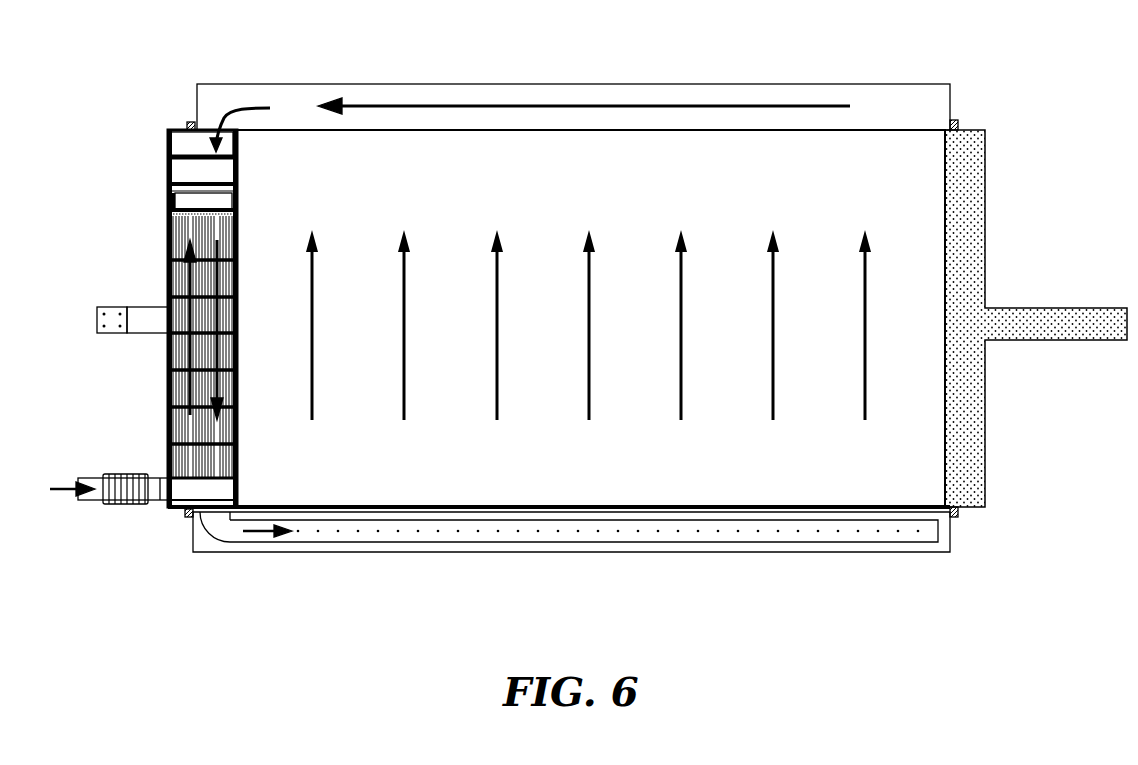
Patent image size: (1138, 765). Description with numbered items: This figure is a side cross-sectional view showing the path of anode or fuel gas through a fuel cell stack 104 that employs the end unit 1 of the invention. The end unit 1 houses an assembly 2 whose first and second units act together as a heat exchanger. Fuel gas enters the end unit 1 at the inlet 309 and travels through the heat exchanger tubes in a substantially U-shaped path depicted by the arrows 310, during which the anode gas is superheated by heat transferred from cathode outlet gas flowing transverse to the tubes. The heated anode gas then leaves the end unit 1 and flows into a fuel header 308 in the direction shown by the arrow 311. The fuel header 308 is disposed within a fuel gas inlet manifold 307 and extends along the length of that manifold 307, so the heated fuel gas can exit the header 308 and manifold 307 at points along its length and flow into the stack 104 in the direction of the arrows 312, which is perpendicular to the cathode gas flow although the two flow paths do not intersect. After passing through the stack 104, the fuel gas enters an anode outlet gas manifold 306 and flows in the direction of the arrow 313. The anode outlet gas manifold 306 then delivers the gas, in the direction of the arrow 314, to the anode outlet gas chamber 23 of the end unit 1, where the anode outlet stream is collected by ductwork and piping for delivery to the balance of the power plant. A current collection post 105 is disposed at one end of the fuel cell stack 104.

The end unit 1 is at (162, 120).
The assembly 2 is at (178, 203).
The anode outlet gas chamber 23 is at (181, 138).
The fuel cell stack 104 is at (880, 148).
The current collection post 105 is at (973, 235).
The anode outlet gas manifold 306 is at (300, 100).
The fuel gas inlet manifold 307 is at (205, 545).
The fuel header 308 is at (366, 540).
The inlet 309 is at (64, 478).
The arrows 310 is at (222, 346).
The arrow 311 is at (256, 540).
The arrows 312 is at (592, 388).
The arrow 313 is at (583, 105).
The arrow 314 is at (236, 107).